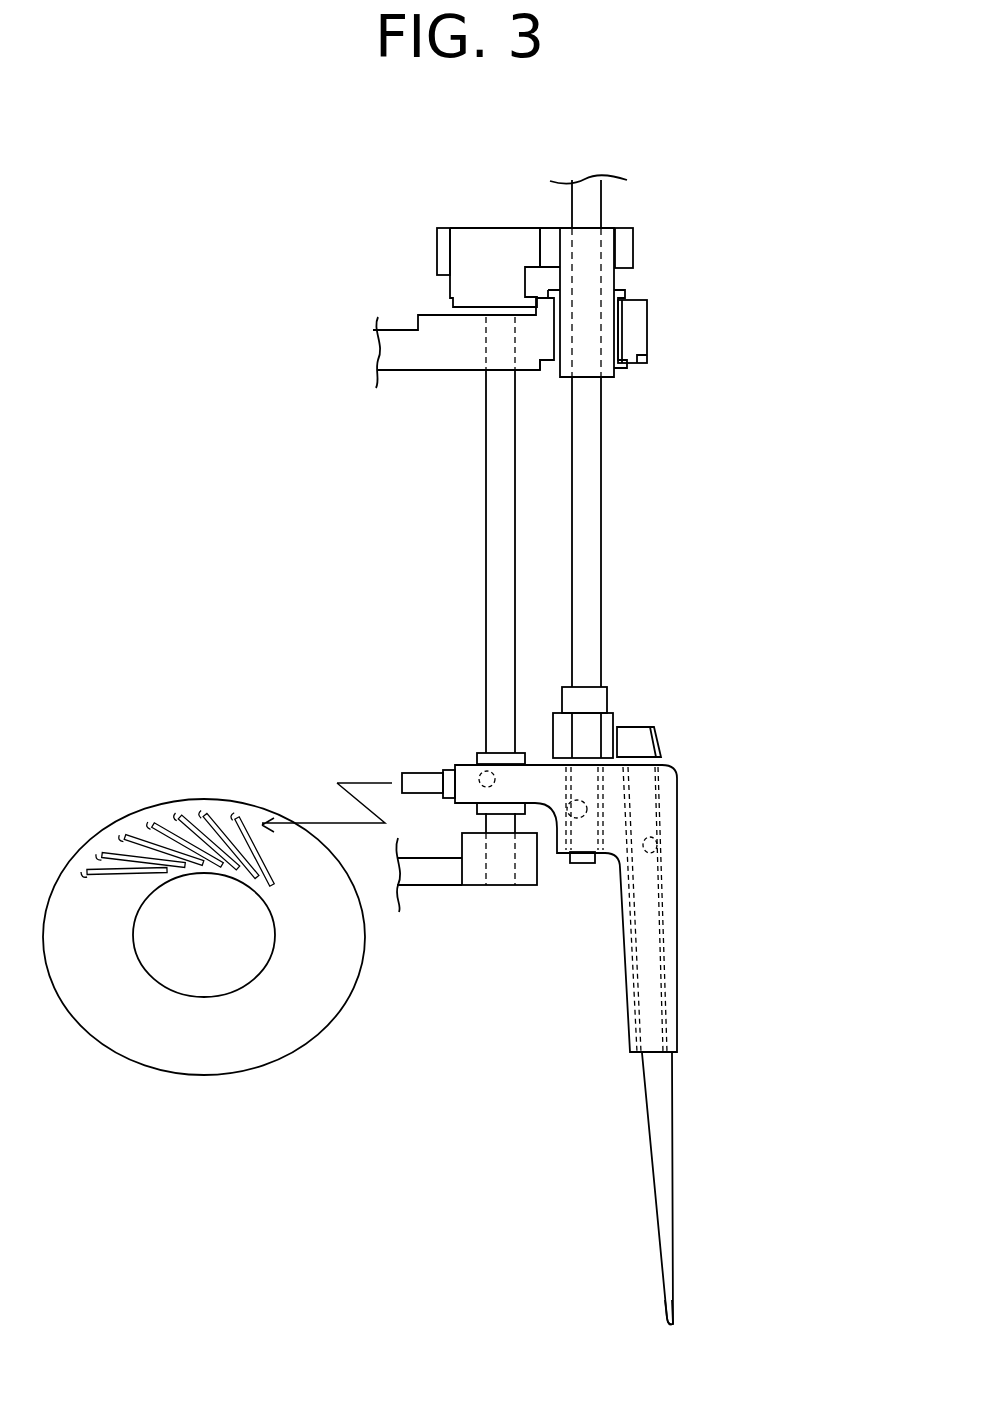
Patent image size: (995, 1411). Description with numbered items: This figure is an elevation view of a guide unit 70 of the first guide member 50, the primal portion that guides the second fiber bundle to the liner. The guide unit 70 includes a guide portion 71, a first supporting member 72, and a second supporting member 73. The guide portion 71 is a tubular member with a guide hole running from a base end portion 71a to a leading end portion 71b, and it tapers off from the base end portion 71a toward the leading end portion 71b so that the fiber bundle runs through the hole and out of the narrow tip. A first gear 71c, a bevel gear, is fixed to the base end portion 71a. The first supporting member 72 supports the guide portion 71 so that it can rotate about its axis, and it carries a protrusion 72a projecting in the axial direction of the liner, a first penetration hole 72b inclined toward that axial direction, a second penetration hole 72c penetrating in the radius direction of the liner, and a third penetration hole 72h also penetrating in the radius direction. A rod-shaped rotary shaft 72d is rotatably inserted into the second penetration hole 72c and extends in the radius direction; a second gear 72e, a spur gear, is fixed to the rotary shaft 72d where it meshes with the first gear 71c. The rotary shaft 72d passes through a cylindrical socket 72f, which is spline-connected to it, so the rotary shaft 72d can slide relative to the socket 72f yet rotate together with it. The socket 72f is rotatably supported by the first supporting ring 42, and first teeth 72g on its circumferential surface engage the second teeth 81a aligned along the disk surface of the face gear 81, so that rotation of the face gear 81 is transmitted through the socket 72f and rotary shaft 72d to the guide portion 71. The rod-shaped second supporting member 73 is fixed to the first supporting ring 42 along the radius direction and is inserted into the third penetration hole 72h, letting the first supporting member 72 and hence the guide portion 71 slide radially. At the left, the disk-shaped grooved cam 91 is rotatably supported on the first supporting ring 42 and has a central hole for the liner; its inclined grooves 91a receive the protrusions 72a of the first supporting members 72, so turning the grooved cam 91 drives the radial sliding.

The first guide member 50 is at (132, 300).
The first supporting ring 42 is at (403, 343).
The guide unit 70 is at (510, 1039).
The guide portion 71 is at (657, 1087).
The base end portion 71a is at (636, 727).
The leading end portion 71b is at (672, 1328).
The first gear 71c is at (658, 745).
The first supporting member 72 is at (670, 792).
The protrusion 72a is at (418, 782).
The first penetration hole 72b is at (670, 848).
The second penetration hole 72c is at (552, 855).
The rotary shaft 72d is at (588, 525).
The second gear 72e is at (616, 718).
The socket 72f is at (600, 280).
The first teeth 72g is at (625, 243).
The third penetration hole 72h is at (463, 758).
The second supporting member 73 is at (497, 528).
The face gear 81 is at (505, 275).
The second teeth 81a is at (548, 232).
The grooved cam 91 is at (226, 1047).
The grooves 91a is at (237, 818).